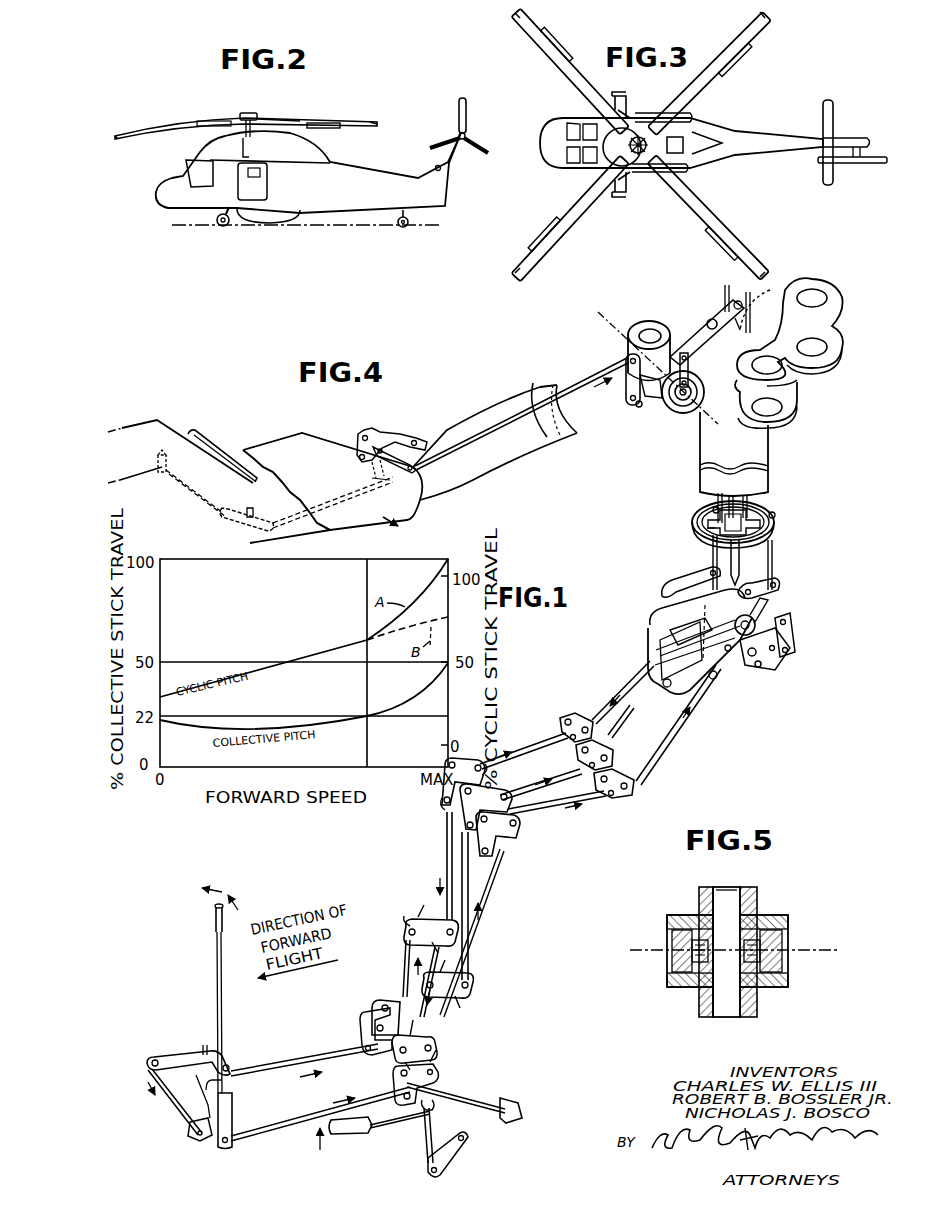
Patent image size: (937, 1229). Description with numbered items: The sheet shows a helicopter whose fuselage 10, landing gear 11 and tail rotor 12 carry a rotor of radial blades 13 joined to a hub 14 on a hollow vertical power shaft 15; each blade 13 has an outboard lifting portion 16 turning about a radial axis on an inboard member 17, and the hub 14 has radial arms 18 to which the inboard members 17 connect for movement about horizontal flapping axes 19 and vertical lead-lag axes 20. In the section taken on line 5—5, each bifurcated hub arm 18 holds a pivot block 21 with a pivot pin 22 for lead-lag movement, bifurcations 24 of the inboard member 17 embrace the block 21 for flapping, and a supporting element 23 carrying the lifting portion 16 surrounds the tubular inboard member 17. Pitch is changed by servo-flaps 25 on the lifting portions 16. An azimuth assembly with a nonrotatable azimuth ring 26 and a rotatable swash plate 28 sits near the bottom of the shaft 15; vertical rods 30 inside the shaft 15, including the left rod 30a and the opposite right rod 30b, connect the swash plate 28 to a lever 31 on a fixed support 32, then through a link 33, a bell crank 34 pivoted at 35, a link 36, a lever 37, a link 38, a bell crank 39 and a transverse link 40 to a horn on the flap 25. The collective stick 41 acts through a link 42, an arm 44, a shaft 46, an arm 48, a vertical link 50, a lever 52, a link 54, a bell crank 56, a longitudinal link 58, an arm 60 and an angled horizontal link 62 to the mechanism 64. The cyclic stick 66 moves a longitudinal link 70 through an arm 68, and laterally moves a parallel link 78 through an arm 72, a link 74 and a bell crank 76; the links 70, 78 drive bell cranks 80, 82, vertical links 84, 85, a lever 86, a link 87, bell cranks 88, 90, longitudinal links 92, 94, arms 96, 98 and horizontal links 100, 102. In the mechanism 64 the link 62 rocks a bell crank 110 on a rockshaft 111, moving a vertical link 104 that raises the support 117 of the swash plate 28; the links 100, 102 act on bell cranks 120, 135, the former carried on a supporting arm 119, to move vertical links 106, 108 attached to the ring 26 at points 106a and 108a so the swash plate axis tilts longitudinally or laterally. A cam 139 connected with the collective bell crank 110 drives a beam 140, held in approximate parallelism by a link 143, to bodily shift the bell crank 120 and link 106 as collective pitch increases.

In FIG. 1, the section line 5— 5 is at (604, 313).
In FIG. 2, the fuselage 10 is at (210, 150).
In FIG. 3, the fuselage 10 is at (557, 160).
In FIG. 2, the landing gear 11 is at (218, 221).
In FIG. 3, the landing gear 11 is at (626, 98).
In FIG. 2, the tail rotor 12 is at (467, 113).
In FIG. 3, the tail rotor 12 is at (865, 162).
In FIG. 2, the radial blades 13 is at (191, 121).
In FIG. 3, the radial blades 13 is at (572, 92).
In FIG. 2, the hub 14 is at (248, 113).
In FIG. 3, the hub 14 is at (640, 167).
In FIG. 1, the hub 14 is at (780, 288).
In FIG. 2, the vertical power shaft 15 is at (300, 123).
In FIG. 1, the vertical power shaft 15 is at (768, 444).
In FIG. 2, the outboard lifting portion 16 is at (135, 132).
In FIG. 3, the outboard lifting portion 16 is at (533, 40).
In FIG. 4, the outboard lifting portion 16 is at (229, 457).
In FIG. 1, the inboard member 17 is at (603, 358).
In FIG. 1, the radial arms 18 is at (833, 290).
In FIG. 5, the radial arms 18 is at (757, 900).
In FIG. 5, the horizontal flapping axes 19 is at (648, 950).
In FIG. 1, the vertical lead-lag axes 20 is at (635, 328).
In FIG. 5, the vertical lead-lag axes 20 is at (726, 888).
In FIG. 1, the pivot block 21 is at (697, 381).
In FIG. 5, the pivot block 21 is at (757, 914).
In FIG. 1, the pivot pin 22 is at (655, 332).
In FIG. 5, the pivot pin 22 is at (716, 890).
In FIG. 4, the supporting element 23 is at (445, 432).
In FIG. 1, the bifurcations 24 is at (705, 398).
In FIG. 5, the bifurcations 24 is at (668, 918).
In FIG. 2, the aerodynamic servo-flaps 25 is at (333, 128).
In FIG. 3, the aerodynamic servo-flaps 25 is at (553, 37).
In FIG. 4, the aerodynamic servo-flaps 25 is at (157, 425).
In FIG. 1, the azimuth ring 26 is at (776, 525).
In FIG. 1, the swash plate 28 is at (753, 505).
In FIG. 1, the vertical rods 30 is at (702, 505).
In FIG. 1, the rod at the left 30a is at (740, 332).
In FIG. 1, the rod at the right 30b is at (727, 287).
In FIG. 1, the lever 31 is at (680, 327).
In FIG. 1, the fixed support 32 is at (700, 295).
In FIG. 1, the link 33 is at (689, 360).
In FIG. 1, the bell crank 34 is at (653, 398).
In FIG. 1, the horizontal axis 35 is at (637, 406).
In FIG. 4, the actuating link 36 is at (497, 428).
In FIG. 1, the actuating link 36 is at (559, 387).
In FIG. 4, the lever 37 is at (397, 453).
In FIG. 4, the link 38 is at (338, 500).
In FIG. 4, the bell crank 39 is at (261, 517).
In FIG. 4, the transverse link 40 is at (217, 513).
In FIG. 1, the collective control stick 41 is at (357, 1133).
In FIG. 1, the link 42 is at (427, 1143).
In FIG. 1, the arm 44 is at (450, 1158).
In FIG. 1, the shaft 46 is at (440, 1093).
In FIG. 1, the arm 48 is at (397, 1013).
In FIG. 1, the vertical link 50 is at (417, 997).
In FIG. 1, the lever 52 is at (460, 990).
In FIG. 1, the link 54 is at (470, 947).
In FIG. 1, the bell crank 56 is at (460, 827).
In FIG. 1, the longitudinal link 58 is at (517, 777).
In FIG. 1, the arm 60 is at (598, 742).
In FIG. 1, the horizontal link 62 is at (625, 725).
In FIG. 1, the mechanism 64 is at (658, 598).
In FIG. 1, the cyclic control stick 66 is at (214, 922).
In FIG. 1, the arm 68 is at (233, 1115).
In FIG. 1, the longitudinal link 70 is at (298, 1118).
In FIG. 1, the arm 72 is at (203, 1125).
In FIG. 1, the link 74 is at (170, 1107).
In FIG. 1, the bell crank 76 is at (177, 1058).
In FIG. 1, the longitudinal link 78 is at (298, 1067).
In FIG. 1, the bell crank 80 is at (430, 1075).
In FIG. 1, the bell crank 82 is at (370, 1022).
In FIG. 1, the vertical link 84 is at (443, 1035).
In FIG. 1, the vertical link 85 is at (405, 960).
In FIG. 1, the lever 86 is at (422, 928).
In FIG. 1, the link 87 is at (447, 867).
In FIG. 1, the bell crank 88 is at (518, 830).
In FIG. 1, the bell crank 90 is at (443, 797).
In FIG. 1, the longitudinal link 92 is at (548, 812).
In FIG. 1, the longitudinal link 94 is at (533, 750).
In FIG. 1, the arm 96 is at (635, 792).
In FIG. 1, the arm 98 is at (580, 718).
In FIG. 1, the horizontal link 100 is at (660, 737).
In FIG. 1, the horizontal link 102 is at (633, 677).
In FIG. 1, the vertical link 104 is at (770, 585).
In FIG. 1, the vertical link 106 is at (773, 550).
In FIG. 1, the connection point 106a is at (775, 514).
In FIG. 1, the vertical link 108 is at (713, 552).
In FIG. 1, the connection point 108a is at (714, 508).
In FIG. 1, the bell crank 110 is at (690, 638).
In FIG. 1, the rockshaft 111 is at (752, 657).
In FIG. 1, the vertically movable support 117 is at (707, 528).
In FIG. 1, the supporting arm 119 is at (770, 616).
In FIG. 1, the bell crank 120 is at (764, 668).
In FIG. 1, the bell crank 135 is at (700, 572).
In FIG. 1, the cam 139 is at (648, 645).
In FIG. 1, the beam 140 is at (758, 668).
In FIG. 1, the link 143 is at (793, 636).